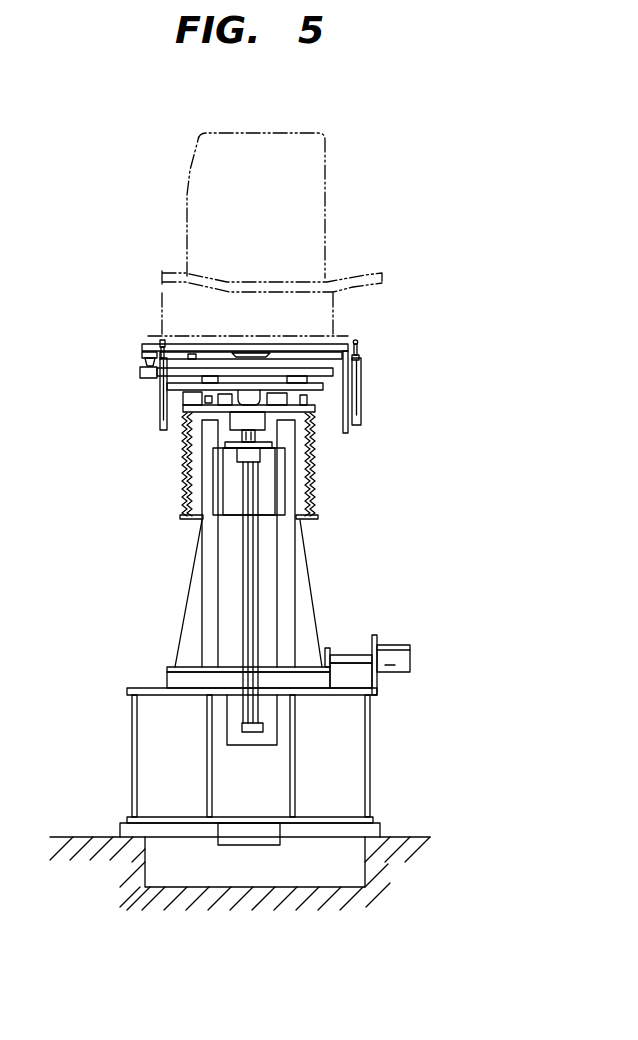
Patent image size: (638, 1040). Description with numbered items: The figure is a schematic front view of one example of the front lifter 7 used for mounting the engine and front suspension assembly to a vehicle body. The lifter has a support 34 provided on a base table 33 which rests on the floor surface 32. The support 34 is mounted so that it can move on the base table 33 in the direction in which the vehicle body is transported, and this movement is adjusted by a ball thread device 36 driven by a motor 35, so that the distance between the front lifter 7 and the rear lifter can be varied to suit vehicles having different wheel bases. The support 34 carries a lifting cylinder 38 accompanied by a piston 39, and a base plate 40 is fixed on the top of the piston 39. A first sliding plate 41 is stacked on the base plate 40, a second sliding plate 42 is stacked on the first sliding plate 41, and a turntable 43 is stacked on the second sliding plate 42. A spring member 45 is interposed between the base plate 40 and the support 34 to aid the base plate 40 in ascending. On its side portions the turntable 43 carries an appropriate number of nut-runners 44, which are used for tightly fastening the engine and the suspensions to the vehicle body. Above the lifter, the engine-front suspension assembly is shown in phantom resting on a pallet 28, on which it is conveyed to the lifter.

The pallet 28 is at (148, 346).
The turntable 43 is at (355, 341).
The second sliding plate 42 is at (335, 371).
The nut-runner 44 is at (160, 400).
The first sliding plate 41 is at (325, 388).
The base plate 40 is at (318, 408).
The spring member 45 is at (318, 500).
The piston 39 is at (247, 432).
The lifting cylinder 38 is at (245, 552).
The support 34 is at (190, 645).
The ball thread device 36 is at (348, 657).
The motor 35 is at (410, 650).
The base table 33 is at (360, 762).
The floor surface 32 is at (80, 837).
The front lifter 7 is at (386, 526).